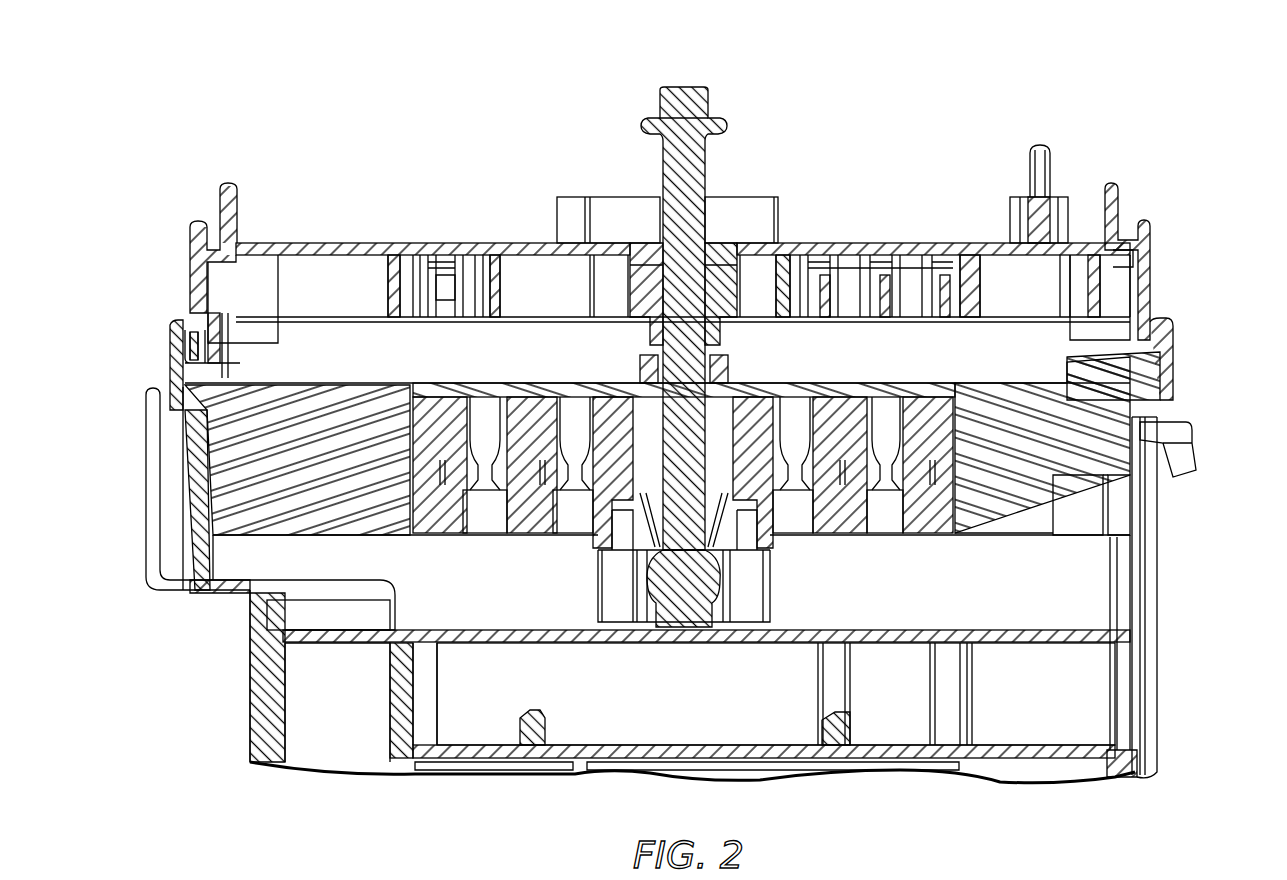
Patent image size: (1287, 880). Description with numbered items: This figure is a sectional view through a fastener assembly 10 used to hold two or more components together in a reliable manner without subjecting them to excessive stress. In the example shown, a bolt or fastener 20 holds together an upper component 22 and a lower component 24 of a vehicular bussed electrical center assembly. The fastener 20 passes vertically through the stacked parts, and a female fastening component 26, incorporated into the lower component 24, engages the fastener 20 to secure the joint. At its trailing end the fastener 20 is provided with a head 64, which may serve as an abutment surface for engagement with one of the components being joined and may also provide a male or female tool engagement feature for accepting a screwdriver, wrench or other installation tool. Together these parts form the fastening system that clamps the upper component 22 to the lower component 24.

The fastener assembly 10 is at (1198, 272).
The fastener 20 is at (708, 102).
The upper component 22 is at (188, 293).
The lower component 24 is at (207, 437).
The female fastening component 26 is at (730, 523).
The head 64 is at (672, 107).